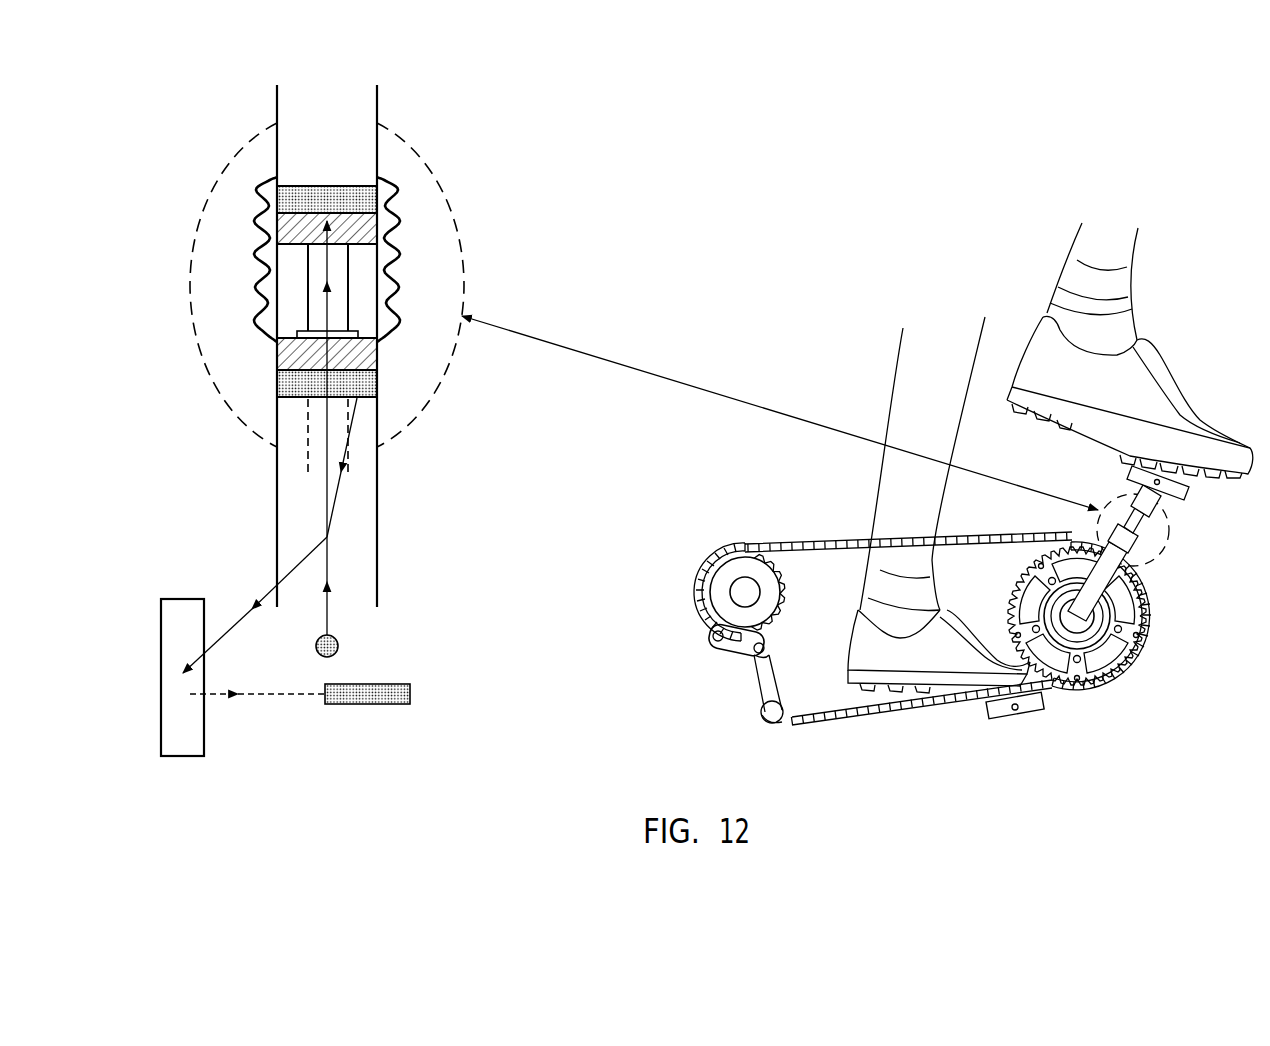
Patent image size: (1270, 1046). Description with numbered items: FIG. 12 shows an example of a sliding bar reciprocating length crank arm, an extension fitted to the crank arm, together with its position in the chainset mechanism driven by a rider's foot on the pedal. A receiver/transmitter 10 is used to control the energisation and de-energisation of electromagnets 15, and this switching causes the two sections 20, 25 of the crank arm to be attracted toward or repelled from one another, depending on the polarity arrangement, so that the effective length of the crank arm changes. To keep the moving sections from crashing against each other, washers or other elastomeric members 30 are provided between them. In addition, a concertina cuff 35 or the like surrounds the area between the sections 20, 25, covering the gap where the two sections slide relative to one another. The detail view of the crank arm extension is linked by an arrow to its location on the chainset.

The receiver/transmitter 10 is at (178, 612).
The electromagnets 15 is at (378, 352).
The crank arm section 20 is at (277, 122).
The crank arm section 25 is at (277, 503).
The washers or elastomeric members 30 is at (297, 333).
The concertina cuff 35 is at (262, 183).